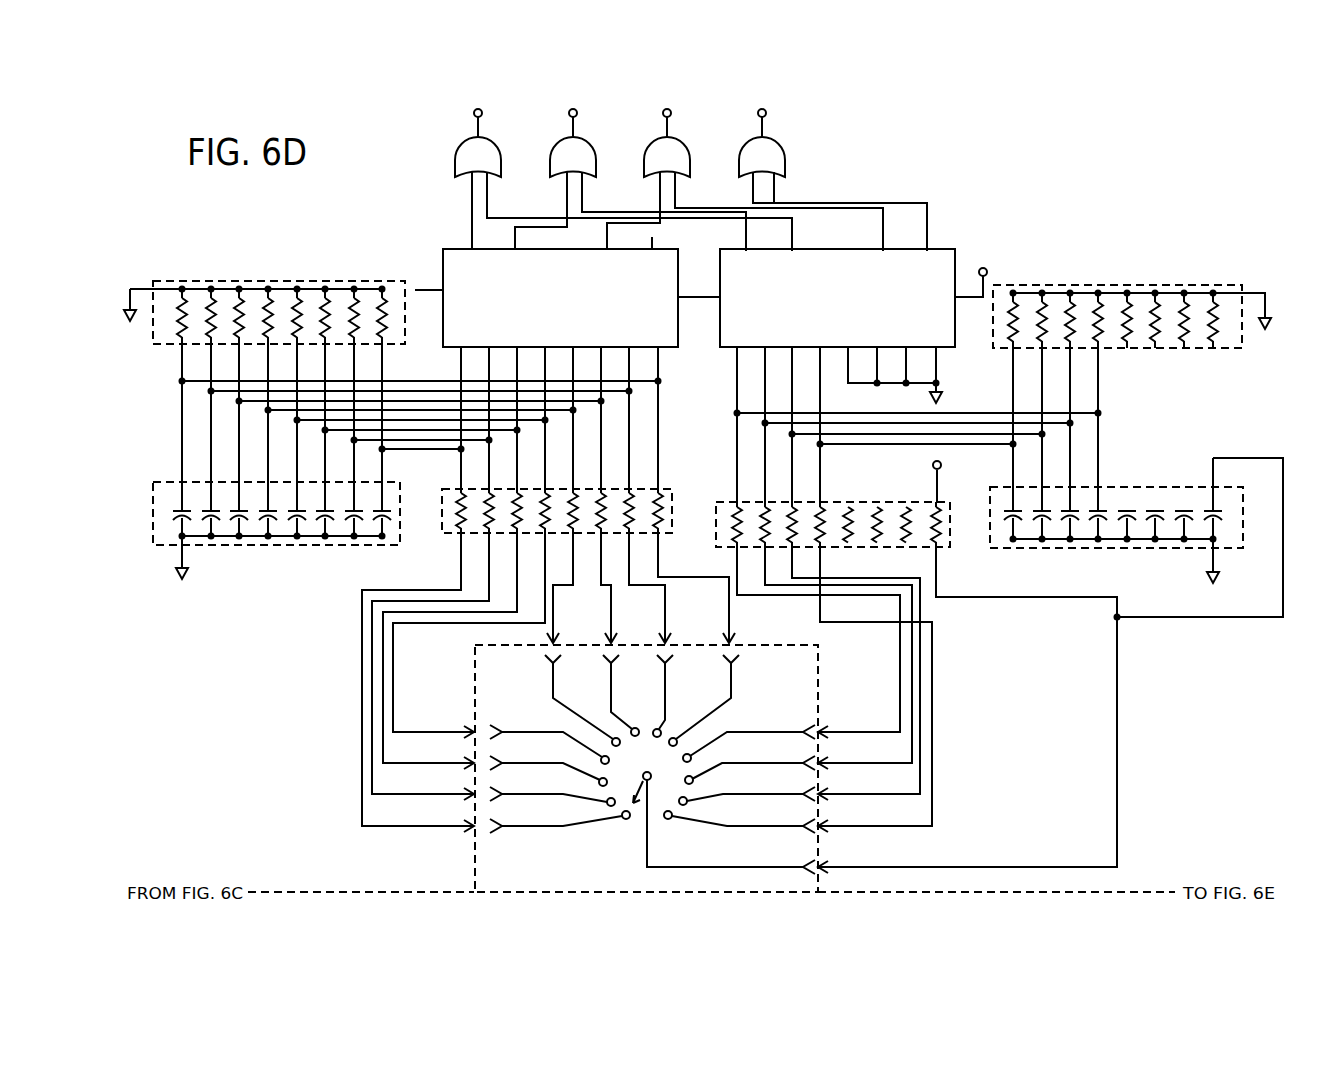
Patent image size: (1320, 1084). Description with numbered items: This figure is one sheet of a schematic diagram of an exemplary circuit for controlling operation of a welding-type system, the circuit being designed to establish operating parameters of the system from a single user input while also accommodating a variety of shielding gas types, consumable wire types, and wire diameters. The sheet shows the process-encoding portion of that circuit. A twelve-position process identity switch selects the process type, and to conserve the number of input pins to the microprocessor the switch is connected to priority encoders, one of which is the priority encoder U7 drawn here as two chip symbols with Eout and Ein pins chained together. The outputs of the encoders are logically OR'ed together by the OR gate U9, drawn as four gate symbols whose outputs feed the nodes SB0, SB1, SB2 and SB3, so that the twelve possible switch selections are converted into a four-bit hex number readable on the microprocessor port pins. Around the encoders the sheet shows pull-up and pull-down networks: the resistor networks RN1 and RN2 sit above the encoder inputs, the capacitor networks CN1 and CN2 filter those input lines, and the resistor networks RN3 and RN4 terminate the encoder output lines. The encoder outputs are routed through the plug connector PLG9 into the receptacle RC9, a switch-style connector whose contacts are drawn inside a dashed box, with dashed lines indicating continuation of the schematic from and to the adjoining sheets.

The OR gate U9 is at (691, 184).
The priority encoder U7 is at (706, 375).
The switch button 0 SB0 is at (478, 101).
The switch button 1 SB1 is at (573, 101).
The switch button 2 SB2 is at (667, 101).
The switch button 3 SB3 is at (762, 101).
The resistor network 1 RN1 is at (261, 387).
The resistor network 2 RN2 is at (1138, 389).
The resistor network 3 RN3 is at (539, 515).
The resistor network 4 RN4 is at (830, 515).
The capacitor network 1 CN1 is at (259, 520).
The capacitor network 2 CN2 is at (1134, 520).
The plug connector 9 PLG9 is at (822, 665).
The receptacle / rotary switch 9 RC9 is at (646, 770).